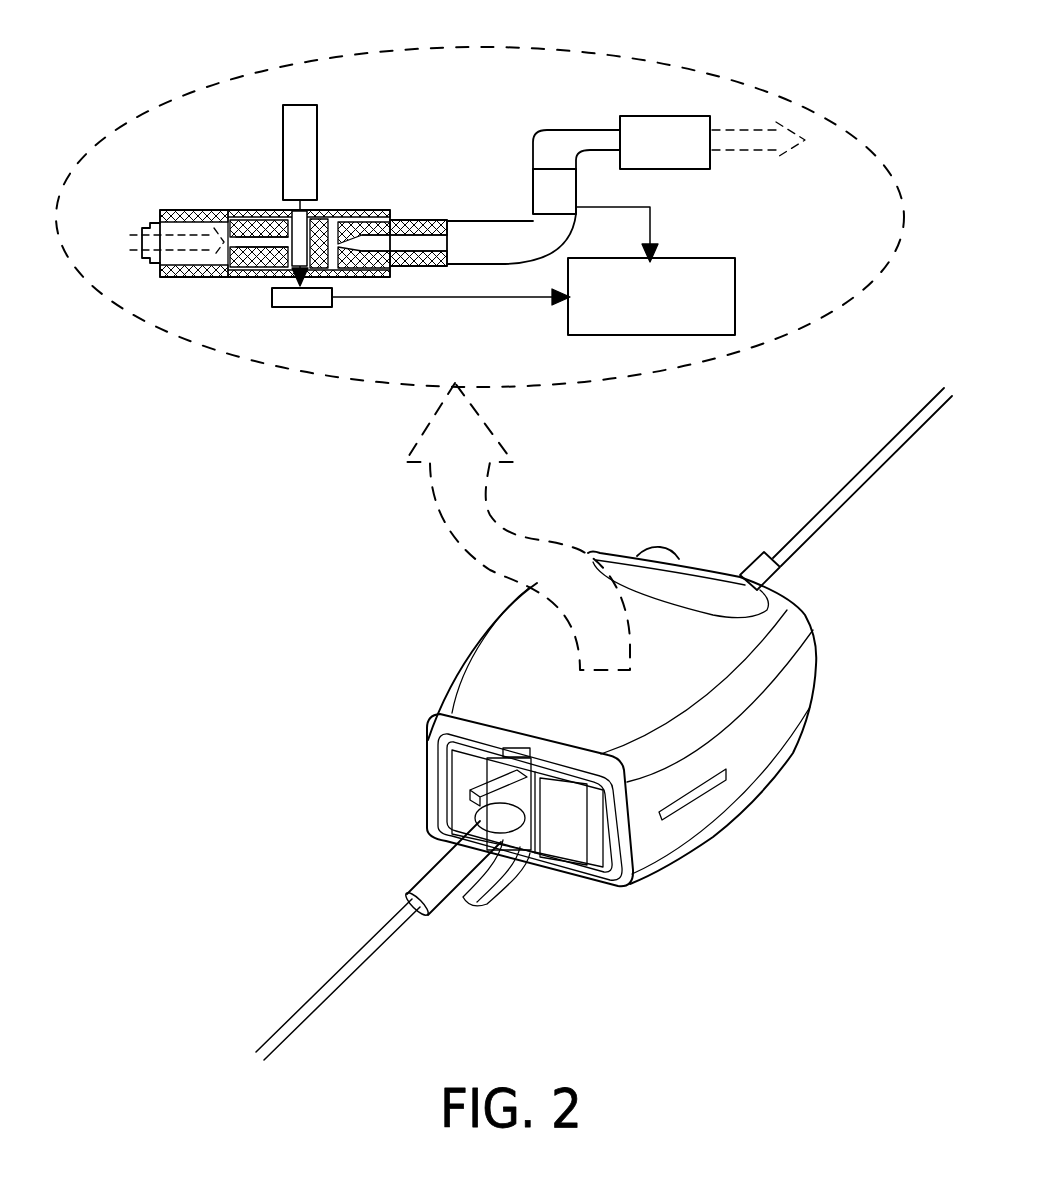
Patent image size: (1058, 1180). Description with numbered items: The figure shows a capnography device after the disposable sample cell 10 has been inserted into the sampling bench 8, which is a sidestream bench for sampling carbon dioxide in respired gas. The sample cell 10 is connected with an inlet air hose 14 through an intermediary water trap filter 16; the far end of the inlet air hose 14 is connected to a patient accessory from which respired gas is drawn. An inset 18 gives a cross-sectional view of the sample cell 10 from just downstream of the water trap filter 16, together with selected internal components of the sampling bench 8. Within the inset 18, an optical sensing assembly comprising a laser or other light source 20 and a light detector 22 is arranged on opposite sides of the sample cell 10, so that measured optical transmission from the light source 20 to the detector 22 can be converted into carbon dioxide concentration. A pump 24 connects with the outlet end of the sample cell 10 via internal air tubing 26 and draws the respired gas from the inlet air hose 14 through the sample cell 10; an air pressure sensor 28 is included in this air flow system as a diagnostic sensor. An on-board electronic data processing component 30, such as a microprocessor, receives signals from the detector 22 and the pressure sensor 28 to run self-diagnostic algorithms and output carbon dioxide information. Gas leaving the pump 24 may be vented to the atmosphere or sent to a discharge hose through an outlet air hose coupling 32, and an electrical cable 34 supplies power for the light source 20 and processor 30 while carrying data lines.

The sampling bench 8 is at (703, 666).
The sample cell 10 is at (374, 196).
The inlet air hose 14 is at (318, 987).
The water trap filter 16 is at (442, 870).
The inset 18 is at (808, 112).
The light source 20 is at (298, 155).
The light detector 22 is at (302, 299).
The pump 24 is at (665, 163).
The internal air tubing 26 is at (540, 135).
The air pressure sensor 28 is at (537, 193).
The electronic data processing component 30 is at (737, 265).
The outlet air hose coupling 32 is at (663, 547).
The electrical cable 34 is at (910, 420).